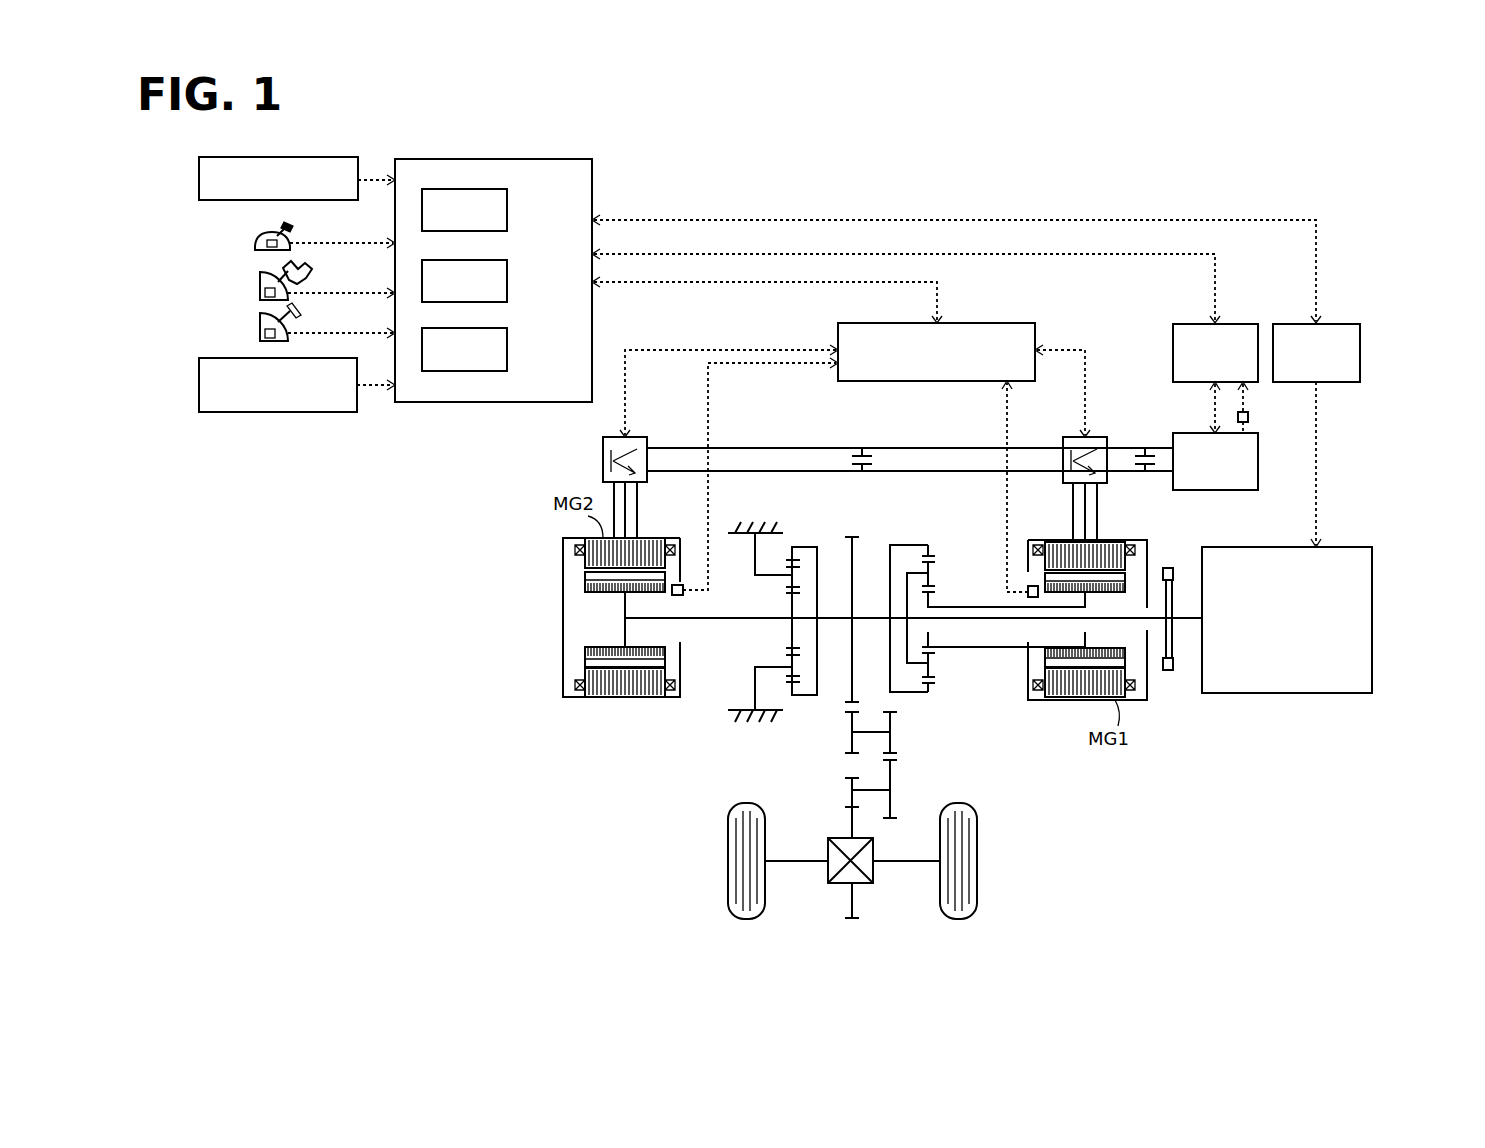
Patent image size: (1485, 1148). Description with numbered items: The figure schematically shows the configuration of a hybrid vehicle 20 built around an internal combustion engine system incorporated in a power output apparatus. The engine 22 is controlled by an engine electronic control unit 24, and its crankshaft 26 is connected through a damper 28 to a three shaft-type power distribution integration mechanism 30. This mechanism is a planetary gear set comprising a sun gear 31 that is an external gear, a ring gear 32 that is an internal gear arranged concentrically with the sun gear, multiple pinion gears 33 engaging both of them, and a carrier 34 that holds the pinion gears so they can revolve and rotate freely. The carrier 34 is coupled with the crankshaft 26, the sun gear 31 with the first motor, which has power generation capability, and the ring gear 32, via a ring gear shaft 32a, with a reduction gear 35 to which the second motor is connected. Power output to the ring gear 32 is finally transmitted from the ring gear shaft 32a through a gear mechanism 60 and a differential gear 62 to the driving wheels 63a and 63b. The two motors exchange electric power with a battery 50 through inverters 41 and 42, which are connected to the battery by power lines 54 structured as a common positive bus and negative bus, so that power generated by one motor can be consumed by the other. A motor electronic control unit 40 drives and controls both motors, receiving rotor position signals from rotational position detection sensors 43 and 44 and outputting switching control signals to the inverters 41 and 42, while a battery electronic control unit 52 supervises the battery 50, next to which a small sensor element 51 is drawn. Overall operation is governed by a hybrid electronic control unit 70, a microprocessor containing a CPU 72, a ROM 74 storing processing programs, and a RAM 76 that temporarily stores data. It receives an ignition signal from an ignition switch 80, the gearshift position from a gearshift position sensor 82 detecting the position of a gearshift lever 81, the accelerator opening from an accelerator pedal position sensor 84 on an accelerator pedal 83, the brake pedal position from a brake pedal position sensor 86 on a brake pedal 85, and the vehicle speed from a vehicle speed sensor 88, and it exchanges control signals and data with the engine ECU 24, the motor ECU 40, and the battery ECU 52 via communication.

The hybrid vehicle 20 is at (1117, 192).
The engine 22 is at (1373, 603).
The engine electronic control unit 24 is at (1337, 323).
The crankshaft 26 is at (1185, 622).
The damper 28 is at (1171, 672).
The power distribution integration mechanism 30 is at (987, 603).
The sun gear 31 is at (935, 635).
The ring gear 32 is at (935, 687).
The ring gear shaft 32a is at (833, 617).
The pinion gears 33 is at (935, 662).
The carrier 34 is at (907, 573).
The reduction gear 35 is at (798, 526).
The motor electronic control unit 40 is at (973, 323).
The inverter 41 is at (1102, 435).
The inverter 42 is at (637, 435).
The rotational position detection sensor 43 is at (1028, 586).
The rotational position detection sensor 44 is at (678, 585).
The battery 50 is at (1213, 490).
The temperature sensor 51 is at (1249, 416).
The battery electronic control unit 52 is at (1193, 324).
The power lines 54 is at (918, 471).
The gear mechanism 60 is at (934, 772).
The differential gear 62 is at (873, 873).
The driving wheel 63a is at (728, 897).
The driving wheel 63b is at (977, 897).
The hybrid electronic control unit 70 is at (492, 159).
The CPU 72 is at (507, 210).
The ROM 74 is at (507, 282).
The RAM 76 is at (507, 352).
The ignition switch 80 is at (199, 172).
The gearshift lever 81 is at (283, 228).
The gearshift position sensor 82 is at (255, 245).
The accelerator pedal 83 is at (287, 270).
The accelerator pedal position sensor 84 is at (265, 291).
The brake pedal 85 is at (290, 310).
The brake pedal position sensor 86 is at (260, 336).
The vehicle speed sensor 88 is at (199, 385).